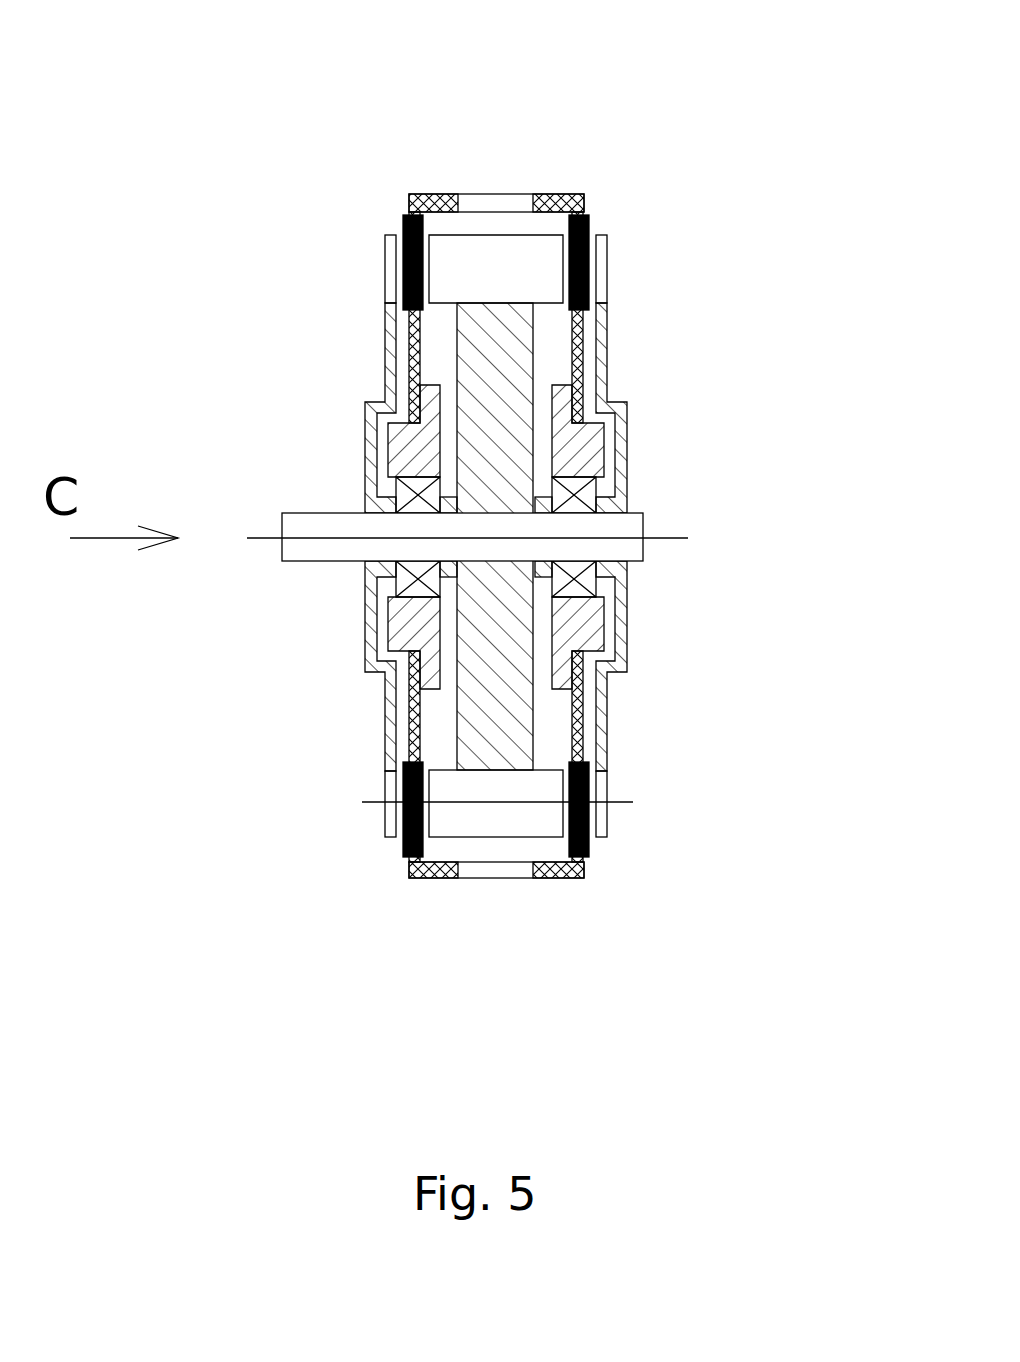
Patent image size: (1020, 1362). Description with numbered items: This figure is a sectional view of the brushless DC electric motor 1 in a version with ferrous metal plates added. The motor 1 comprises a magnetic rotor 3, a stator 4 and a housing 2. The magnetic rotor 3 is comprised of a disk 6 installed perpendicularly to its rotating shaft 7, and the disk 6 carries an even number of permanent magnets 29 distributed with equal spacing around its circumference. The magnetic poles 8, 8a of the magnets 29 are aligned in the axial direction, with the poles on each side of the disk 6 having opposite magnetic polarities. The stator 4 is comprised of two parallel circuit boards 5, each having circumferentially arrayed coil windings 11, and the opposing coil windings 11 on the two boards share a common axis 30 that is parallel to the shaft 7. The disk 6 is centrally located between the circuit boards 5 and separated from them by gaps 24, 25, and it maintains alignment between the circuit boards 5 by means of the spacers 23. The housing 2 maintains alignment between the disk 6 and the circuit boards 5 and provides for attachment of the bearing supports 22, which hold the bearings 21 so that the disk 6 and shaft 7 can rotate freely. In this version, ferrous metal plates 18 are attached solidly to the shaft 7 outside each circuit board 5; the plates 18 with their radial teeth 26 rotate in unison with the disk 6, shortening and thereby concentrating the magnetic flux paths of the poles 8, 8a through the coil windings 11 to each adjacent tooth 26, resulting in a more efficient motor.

The brushless DC electric motor 1 is at (223, 138).
The housing 2 is at (407, 877).
The magnetic rotor 3 is at (500, 368).
The stator 4 is at (580, 734).
The circuit boards 5 is at (404, 279).
The disk 6 is at (502, 675).
The shaft 7 is at (600, 525).
The magnetic pole 8 is at (440, 245).
The magnetic pole 8a is at (555, 245).
The coil windings 11 is at (588, 850).
The ferrous metal plates 18 is at (390, 373).
The bearings 21 is at (432, 492).
The bearing supports 22 is at (568, 438).
The spacers 23 is at (443, 572).
The gap 24 is at (430, 847).
The gap 25 is at (565, 847).
The radial teeth 26 is at (390, 292).
The permanent magnets 29 is at (480, 825).
The common axis 30 is at (372, 802).